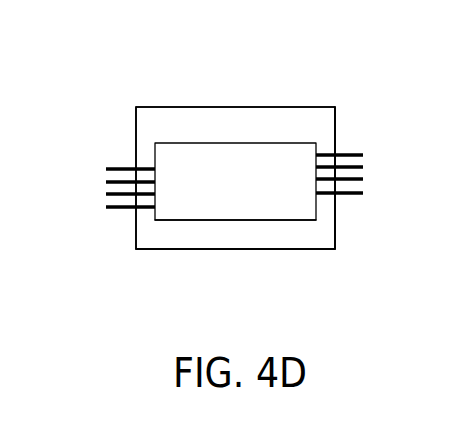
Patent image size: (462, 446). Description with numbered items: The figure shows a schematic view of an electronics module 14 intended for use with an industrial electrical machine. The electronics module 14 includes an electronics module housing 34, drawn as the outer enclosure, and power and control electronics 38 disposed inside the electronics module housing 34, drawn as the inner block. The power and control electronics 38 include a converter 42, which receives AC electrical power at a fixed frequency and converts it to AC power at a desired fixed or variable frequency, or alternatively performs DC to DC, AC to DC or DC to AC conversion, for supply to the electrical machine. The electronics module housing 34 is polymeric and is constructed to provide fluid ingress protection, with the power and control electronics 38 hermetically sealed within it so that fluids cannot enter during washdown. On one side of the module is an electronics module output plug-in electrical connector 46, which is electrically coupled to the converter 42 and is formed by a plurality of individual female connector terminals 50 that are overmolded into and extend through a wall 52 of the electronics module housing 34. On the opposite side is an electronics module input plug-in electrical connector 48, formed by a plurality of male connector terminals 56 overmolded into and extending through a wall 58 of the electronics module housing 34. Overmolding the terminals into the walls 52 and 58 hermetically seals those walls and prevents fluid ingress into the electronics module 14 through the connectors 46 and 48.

The electronics module 14 is at (343, 59).
The electronics module housing 34 is at (302, 107).
The power and control electronics 38 is at (224, 129).
The converter 42 is at (278, 220).
The electronics module output plug-in electrical connector 46 is at (121, 146).
The electronics module input plug-in electrical connector 48 is at (354, 136).
The female connector terminals 50 is at (107, 181).
The wall 52 is at (136, 233).
The male connector terminals 56 is at (363, 165).
The wall 58 is at (336, 230).